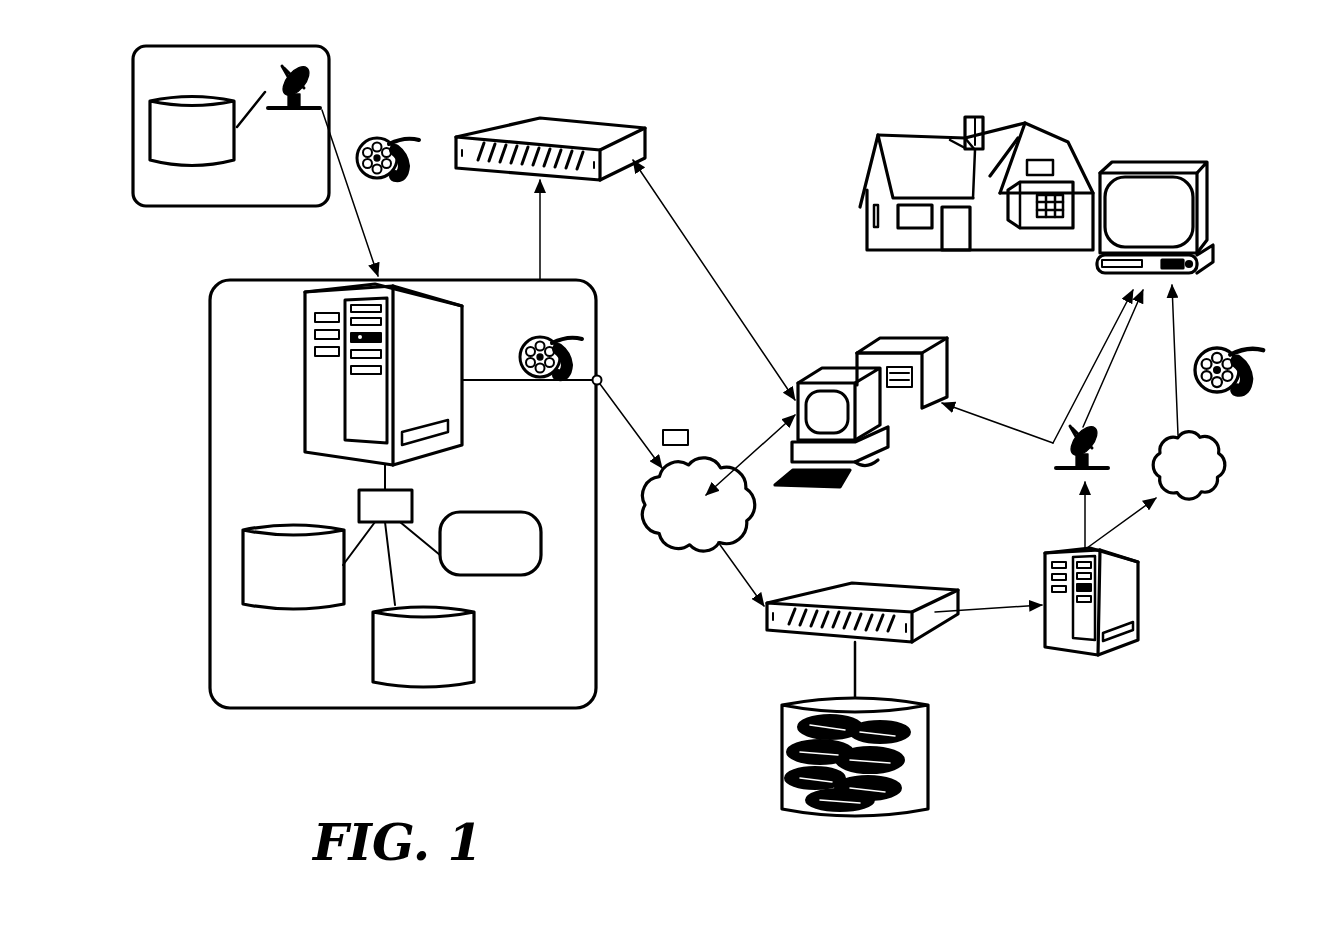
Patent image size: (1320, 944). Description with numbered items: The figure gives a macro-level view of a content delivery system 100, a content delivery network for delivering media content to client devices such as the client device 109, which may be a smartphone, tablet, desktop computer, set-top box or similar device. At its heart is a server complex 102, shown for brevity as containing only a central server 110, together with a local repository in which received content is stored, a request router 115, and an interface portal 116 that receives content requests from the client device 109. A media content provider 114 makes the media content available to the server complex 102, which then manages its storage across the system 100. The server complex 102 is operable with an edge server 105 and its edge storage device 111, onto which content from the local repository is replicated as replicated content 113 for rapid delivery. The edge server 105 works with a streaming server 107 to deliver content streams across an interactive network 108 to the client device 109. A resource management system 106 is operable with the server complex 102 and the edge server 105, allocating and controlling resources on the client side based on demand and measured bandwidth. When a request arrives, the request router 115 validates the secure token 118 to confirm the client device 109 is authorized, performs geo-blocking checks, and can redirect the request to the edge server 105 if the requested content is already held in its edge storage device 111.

The system 100 is at (190, 420).
The server complex 102 is at (400, 279).
The edge server 105 is at (865, 625).
The resource management system 106 is at (898, 405).
The streaming server 107 is at (1115, 607).
The interactive network 108 is at (1220, 495).
The client device 109 is at (1215, 252).
The central server 110 is at (300, 352).
The edge storage device 111 is at (860, 762).
The replicated content 113 is at (1217, 342).
The media content provider 114 is at (332, 70).
The request router 115 is at (490, 578).
The interface portal 116 is at (601, 373).
The secure token 118 is at (668, 430).